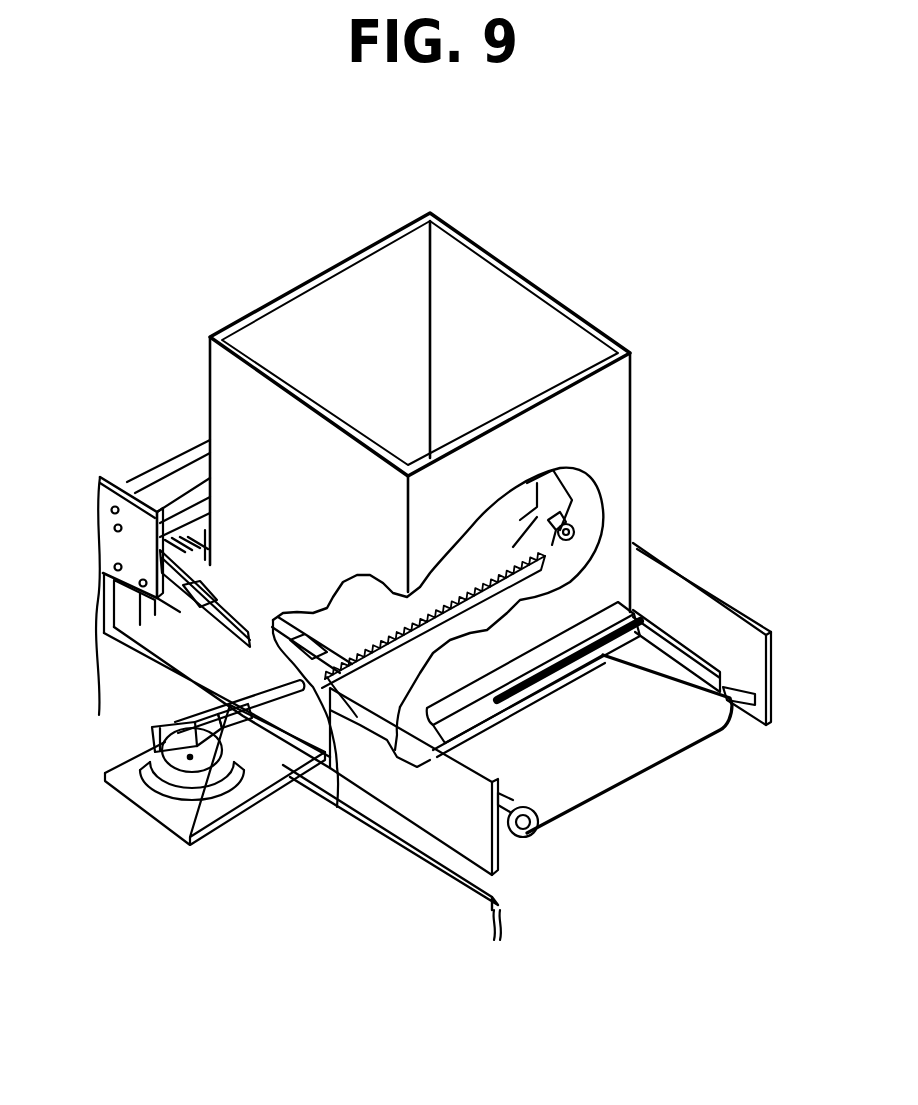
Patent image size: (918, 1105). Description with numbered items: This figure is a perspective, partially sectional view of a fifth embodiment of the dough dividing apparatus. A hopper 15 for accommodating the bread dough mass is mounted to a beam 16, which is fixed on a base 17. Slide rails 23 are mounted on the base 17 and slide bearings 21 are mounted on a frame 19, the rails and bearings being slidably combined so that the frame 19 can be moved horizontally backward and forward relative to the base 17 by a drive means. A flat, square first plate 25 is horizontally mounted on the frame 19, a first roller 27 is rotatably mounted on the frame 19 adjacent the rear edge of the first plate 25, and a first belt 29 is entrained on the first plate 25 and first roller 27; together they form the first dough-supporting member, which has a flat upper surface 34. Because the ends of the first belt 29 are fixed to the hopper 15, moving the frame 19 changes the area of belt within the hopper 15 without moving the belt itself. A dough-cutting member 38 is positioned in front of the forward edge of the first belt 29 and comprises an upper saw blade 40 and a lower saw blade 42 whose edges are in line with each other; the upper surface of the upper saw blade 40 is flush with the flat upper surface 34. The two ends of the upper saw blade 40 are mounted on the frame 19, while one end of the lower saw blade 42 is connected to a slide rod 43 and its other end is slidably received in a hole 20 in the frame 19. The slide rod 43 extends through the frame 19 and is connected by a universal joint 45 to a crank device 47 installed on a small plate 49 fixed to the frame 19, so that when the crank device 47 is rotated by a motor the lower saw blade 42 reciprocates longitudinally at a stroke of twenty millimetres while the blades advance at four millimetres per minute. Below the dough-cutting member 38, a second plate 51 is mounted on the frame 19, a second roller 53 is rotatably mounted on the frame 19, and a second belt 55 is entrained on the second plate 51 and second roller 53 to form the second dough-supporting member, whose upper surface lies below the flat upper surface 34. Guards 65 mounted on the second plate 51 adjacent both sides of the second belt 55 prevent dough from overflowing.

The hopper 15 is at (470, 233).
The beam 16 is at (140, 475).
The base 17 is at (100, 475).
The frame 19 is at (752, 612).
The hole 20 is at (578, 585).
The slide bearings 21 is at (183, 605).
The slide rails 23 is at (100, 647).
The first plate 25 is at (547, 507).
The first roller 27 is at (178, 540).
The first belt 29 is at (592, 515).
The flat upper surface 34 is at (337, 612).
The dough-cutting member 38 is at (433, 597).
The upper saw blade 40 is at (450, 598).
The lower saw blade 42 is at (327, 700).
The slide rod 43 is at (278, 707).
The universal joint 45 is at (258, 745).
The crank device 47 is at (183, 763).
The small plate 49 is at (125, 780).
The second plate 51 is at (645, 622).
The second roller 53 is at (530, 835).
The second belt 55 is at (597, 767).
The guards 65 is at (680, 628).